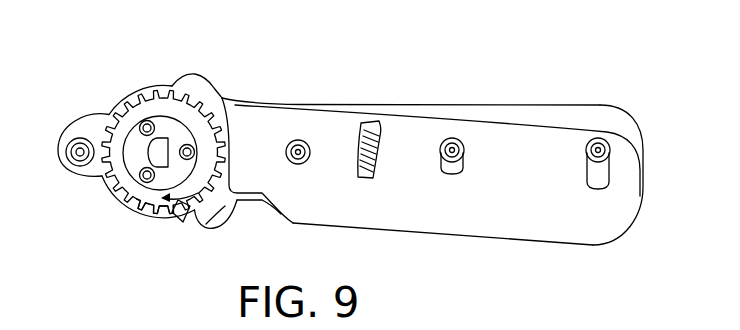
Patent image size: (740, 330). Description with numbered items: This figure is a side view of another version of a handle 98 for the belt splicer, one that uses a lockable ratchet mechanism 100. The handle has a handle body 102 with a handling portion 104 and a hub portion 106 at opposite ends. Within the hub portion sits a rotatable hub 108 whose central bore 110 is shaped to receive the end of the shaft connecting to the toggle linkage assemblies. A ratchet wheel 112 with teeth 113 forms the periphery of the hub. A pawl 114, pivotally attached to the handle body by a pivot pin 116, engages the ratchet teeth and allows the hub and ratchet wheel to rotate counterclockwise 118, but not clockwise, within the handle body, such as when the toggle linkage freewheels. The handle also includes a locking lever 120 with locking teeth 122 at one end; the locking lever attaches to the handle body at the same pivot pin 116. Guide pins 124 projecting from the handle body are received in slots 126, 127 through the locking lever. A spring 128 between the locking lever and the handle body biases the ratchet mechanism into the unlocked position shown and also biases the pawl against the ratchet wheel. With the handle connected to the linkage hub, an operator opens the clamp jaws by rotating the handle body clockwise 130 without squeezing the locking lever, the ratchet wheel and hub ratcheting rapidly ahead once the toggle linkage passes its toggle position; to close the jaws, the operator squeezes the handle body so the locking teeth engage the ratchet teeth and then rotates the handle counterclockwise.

The handle 98 is at (440, 72).
The lockable ratchet mechanism 100 is at (147, 88).
The handle body 102 is at (380, 110).
The handling portion 104 is at (568, 110).
The hub portion 106 is at (102, 173).
The rotatable hub 108 is at (135, 165).
The central bore 110 is at (152, 150).
The ratchet wheel 112 is at (135, 108).
The teeth 113 is at (137, 210).
The pawl 114 is at (212, 210).
The pivot pin 116 is at (300, 140).
The counterclockwise rotation 118 is at (180, 205).
The locking lever 120 is at (510, 228).
The locking teeth 122 is at (183, 80).
The guide pins 124 is at (454, 138).
The slot 126 is at (452, 174).
The slot 127 is at (605, 178).
The spring 128 is at (367, 178).
The clockwise rotation 130 is at (549, 118).